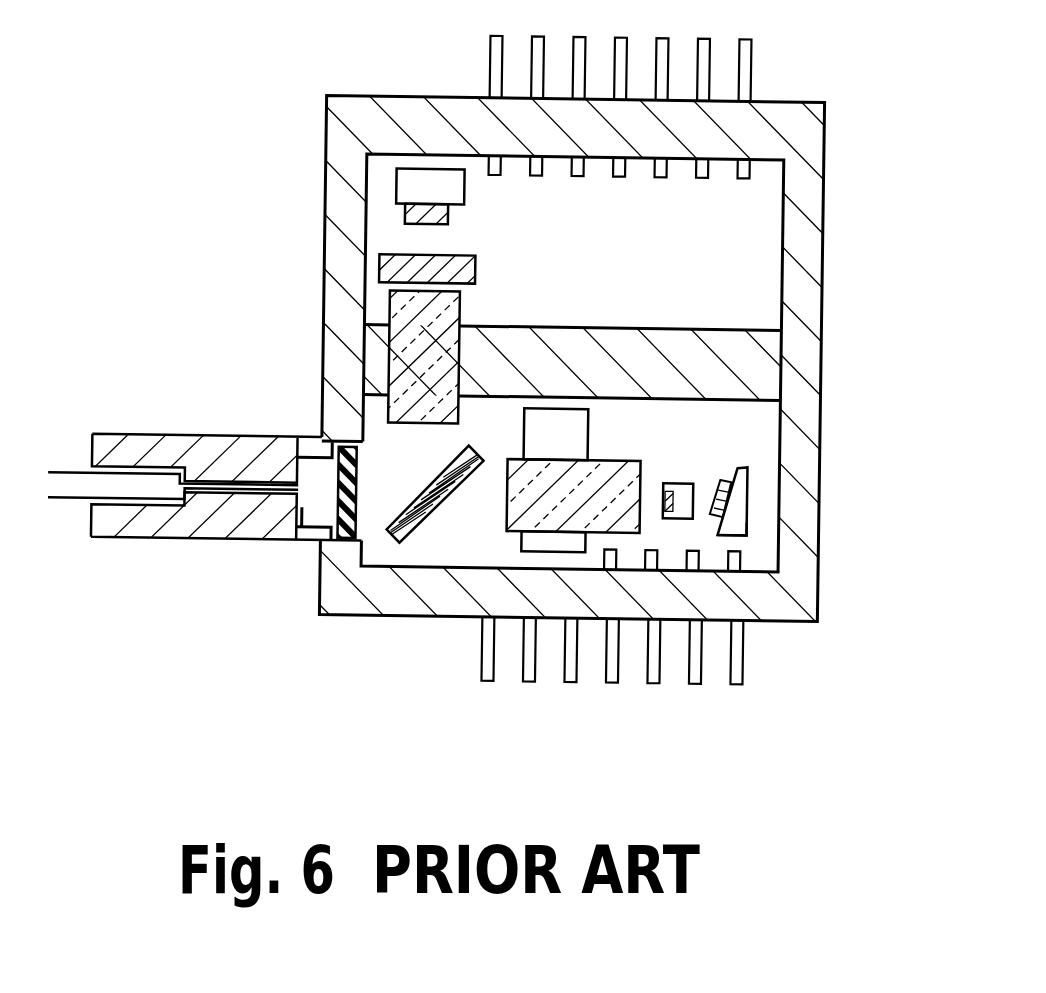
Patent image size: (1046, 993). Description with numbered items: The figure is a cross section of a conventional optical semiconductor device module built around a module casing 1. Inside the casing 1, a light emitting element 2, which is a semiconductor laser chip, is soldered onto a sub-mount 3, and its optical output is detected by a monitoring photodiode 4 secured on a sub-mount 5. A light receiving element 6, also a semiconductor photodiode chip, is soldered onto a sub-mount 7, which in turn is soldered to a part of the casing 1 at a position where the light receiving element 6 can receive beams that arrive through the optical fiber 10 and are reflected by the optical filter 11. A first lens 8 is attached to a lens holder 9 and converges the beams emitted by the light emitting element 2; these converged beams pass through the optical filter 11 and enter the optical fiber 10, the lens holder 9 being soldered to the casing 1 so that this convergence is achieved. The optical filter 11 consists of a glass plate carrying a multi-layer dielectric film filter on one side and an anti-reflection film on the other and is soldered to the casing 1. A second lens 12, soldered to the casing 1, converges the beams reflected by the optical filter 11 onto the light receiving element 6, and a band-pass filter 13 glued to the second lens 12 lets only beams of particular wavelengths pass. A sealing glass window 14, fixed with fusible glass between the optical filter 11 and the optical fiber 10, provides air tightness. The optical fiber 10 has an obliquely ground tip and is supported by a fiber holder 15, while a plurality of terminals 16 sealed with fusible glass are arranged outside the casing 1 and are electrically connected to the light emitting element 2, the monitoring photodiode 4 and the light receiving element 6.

The module casing 1 is at (823, 262).
The light emitting element 2 is at (683, 483).
The sub-mount 3 is at (738, 468).
The monitoring photodiode 4 is at (743, 491).
The sub-mount 5 is at (748, 531).
The light receiving element 6 is at (403, 213).
The sub-mount 7 is at (396, 178).
The first lens 8 is at (520, 538).
The lens holder 9 is at (507, 485).
The optical fiber 10 is at (72, 473).
The optical filter 11 is at (400, 518).
The second lens 12 is at (389, 328).
The band-pass filter 13 is at (378, 262).
The sealing glass window 14 is at (340, 497).
The fiber holder 15 is at (155, 434).
The terminals 16 is at (478, 62).